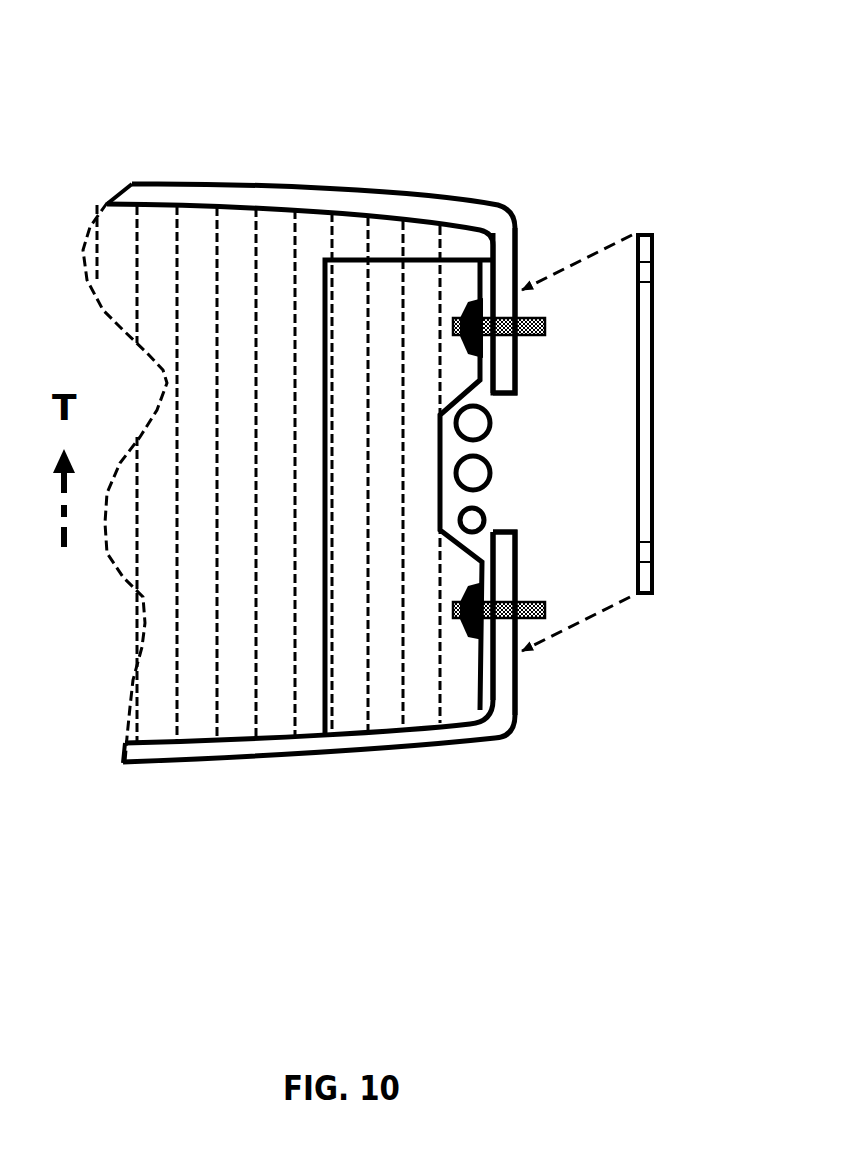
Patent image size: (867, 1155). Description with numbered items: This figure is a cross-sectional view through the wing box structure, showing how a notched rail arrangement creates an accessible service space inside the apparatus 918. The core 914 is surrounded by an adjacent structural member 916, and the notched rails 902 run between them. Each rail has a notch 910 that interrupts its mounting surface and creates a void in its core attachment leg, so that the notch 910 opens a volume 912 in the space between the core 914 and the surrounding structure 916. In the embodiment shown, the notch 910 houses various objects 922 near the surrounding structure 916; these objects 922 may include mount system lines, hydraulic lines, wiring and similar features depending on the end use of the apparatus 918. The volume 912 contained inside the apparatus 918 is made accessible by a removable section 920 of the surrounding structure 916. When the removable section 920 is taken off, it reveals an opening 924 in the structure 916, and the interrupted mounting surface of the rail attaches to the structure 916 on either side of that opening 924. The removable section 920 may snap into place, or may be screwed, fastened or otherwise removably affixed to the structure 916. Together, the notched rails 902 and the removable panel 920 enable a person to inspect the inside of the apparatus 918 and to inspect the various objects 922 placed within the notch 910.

The notched rails 902 is at (386, 258).
The notch 910 is at (509, 496).
The volume 912 is at (514, 418).
The core 914 is at (229, 229).
The structural member 916 is at (467, 208).
The apparatus 918 is at (128, 164).
The removable section 920 is at (645, 342).
The various objects 922 is at (500, 467).
The opening 924 is at (500, 523).